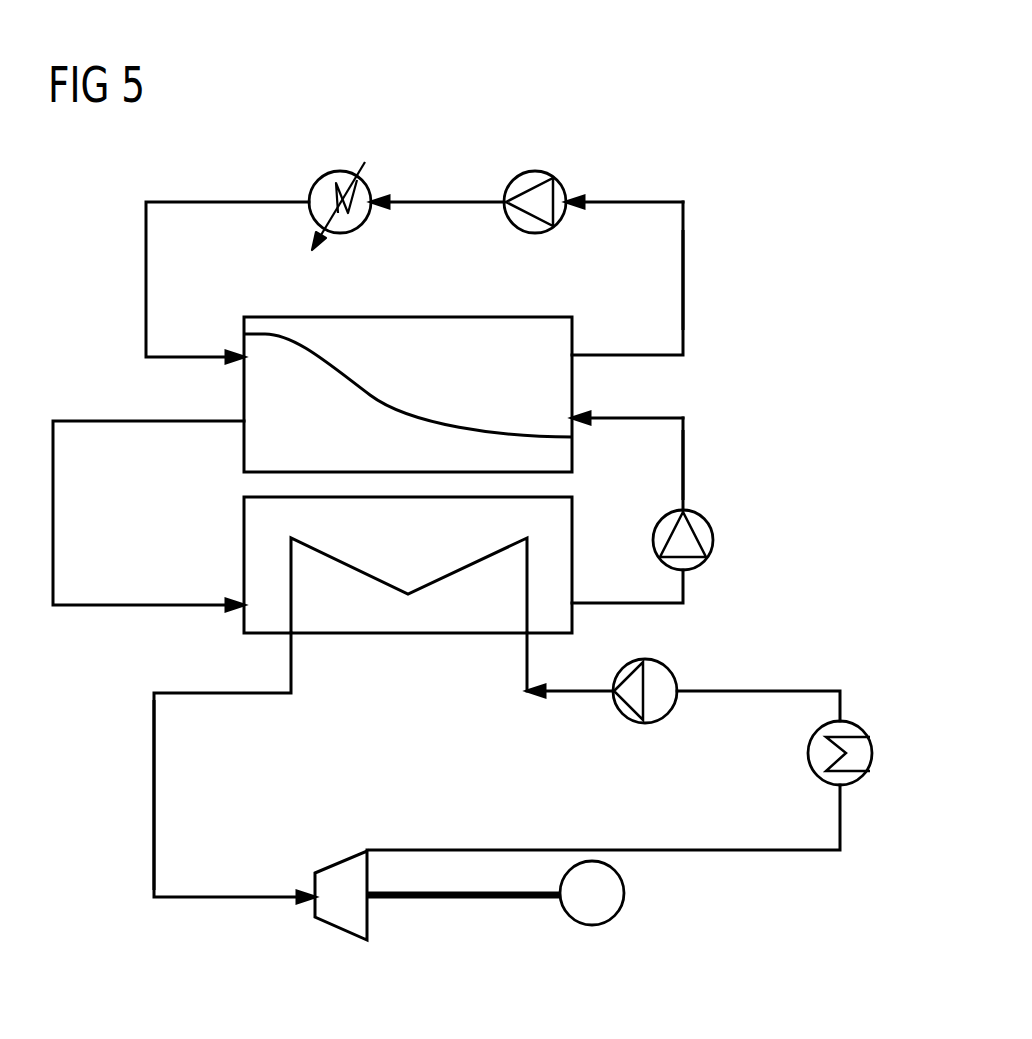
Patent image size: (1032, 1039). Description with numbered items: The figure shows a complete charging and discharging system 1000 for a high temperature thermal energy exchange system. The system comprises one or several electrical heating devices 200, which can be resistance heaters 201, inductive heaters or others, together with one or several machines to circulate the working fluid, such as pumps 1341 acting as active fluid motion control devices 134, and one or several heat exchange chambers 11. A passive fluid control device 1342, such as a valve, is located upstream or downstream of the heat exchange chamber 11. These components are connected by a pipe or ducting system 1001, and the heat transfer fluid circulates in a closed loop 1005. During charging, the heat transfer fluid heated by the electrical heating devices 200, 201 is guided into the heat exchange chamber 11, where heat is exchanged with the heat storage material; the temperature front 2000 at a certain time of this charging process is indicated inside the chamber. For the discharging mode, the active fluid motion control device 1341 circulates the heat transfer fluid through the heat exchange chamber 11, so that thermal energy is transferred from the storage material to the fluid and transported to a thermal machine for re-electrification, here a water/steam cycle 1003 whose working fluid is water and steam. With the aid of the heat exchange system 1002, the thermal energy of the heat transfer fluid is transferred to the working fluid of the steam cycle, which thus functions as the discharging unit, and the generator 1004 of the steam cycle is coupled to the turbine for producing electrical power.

The electrical heating device 200 is at (356, 173).
The resistance heater 201 is at (338, 171).
The active fluid motion control device 134 is at (691, 334).
The pump 1341 is at (543, 171).
The passive fluid control device 1342 is at (713, 540).
The pipe or ducting system 1001 is at (683, 278).
The heat exchange chamber 11 is at (572, 372).
The temperature front 2000 is at (407, 378).
The charging and discharging system 1000 is at (772, 407).
The closed loop 1005 is at (817, 480).
The heat exchange system 1002 is at (244, 518).
The water/steam cycle 1003 is at (154, 768).
The generator 1004 is at (625, 893).